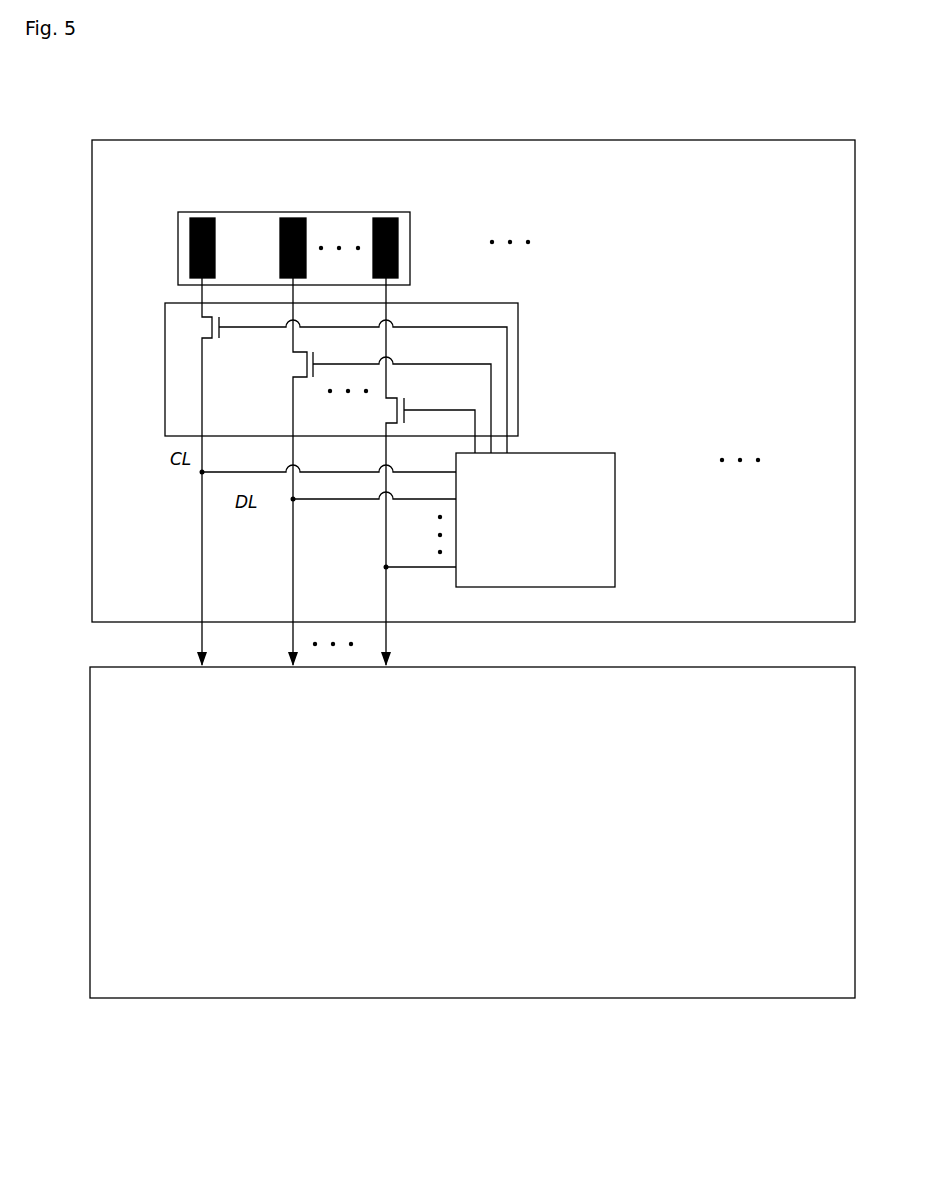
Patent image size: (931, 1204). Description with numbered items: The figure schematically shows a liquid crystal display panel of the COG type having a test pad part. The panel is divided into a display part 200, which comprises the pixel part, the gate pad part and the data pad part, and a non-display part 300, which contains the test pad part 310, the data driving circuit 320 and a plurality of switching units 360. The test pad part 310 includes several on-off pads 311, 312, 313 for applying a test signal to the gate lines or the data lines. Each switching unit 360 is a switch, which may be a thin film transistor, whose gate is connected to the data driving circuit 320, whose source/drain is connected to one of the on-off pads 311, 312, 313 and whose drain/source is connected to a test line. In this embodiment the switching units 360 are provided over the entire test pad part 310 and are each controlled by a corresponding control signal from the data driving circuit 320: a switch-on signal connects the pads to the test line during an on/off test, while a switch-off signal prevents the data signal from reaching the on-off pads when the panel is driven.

The non-display part 300 is at (488, 140).
The display part 200 is at (538, 998).
The test pad part 310 is at (410, 240).
The on-off pad 311 is at (196, 212).
The on-off pad 312 is at (288, 212).
The on-off pad 313 is at (379, 212).
The switching units 360 is at (175, 303).
The data driving circuit 320 is at (573, 453).